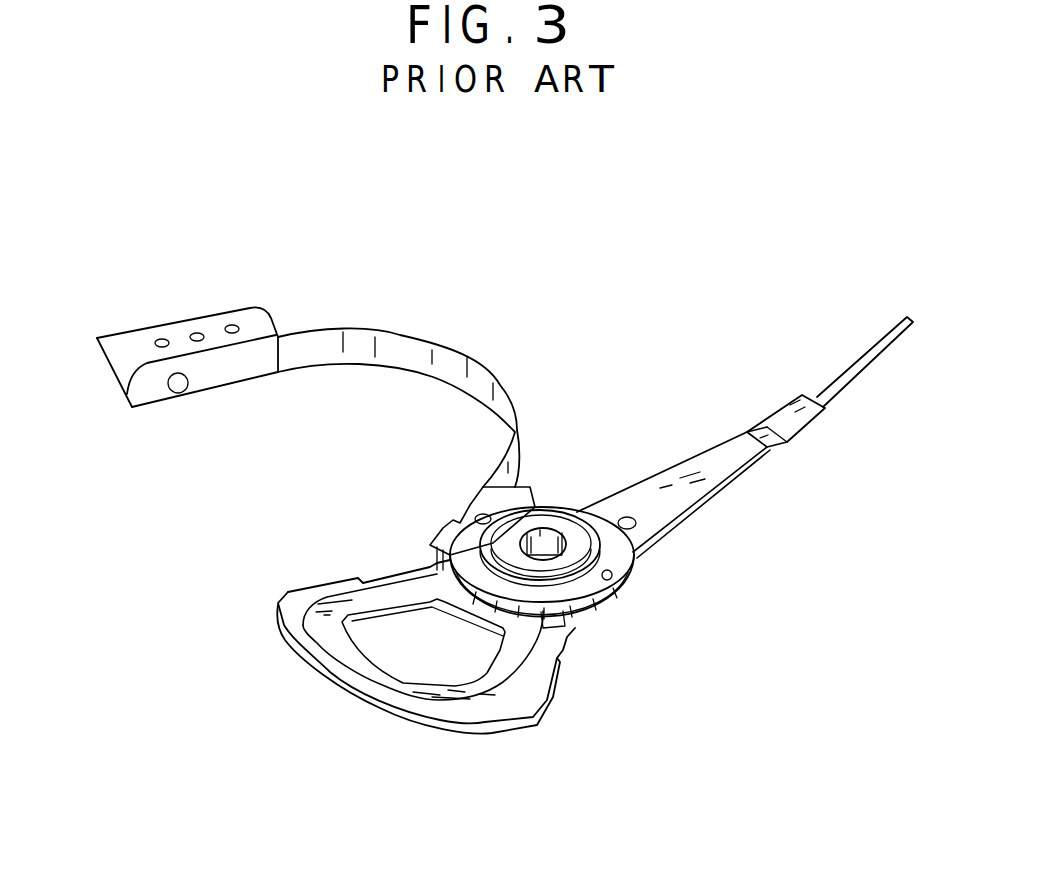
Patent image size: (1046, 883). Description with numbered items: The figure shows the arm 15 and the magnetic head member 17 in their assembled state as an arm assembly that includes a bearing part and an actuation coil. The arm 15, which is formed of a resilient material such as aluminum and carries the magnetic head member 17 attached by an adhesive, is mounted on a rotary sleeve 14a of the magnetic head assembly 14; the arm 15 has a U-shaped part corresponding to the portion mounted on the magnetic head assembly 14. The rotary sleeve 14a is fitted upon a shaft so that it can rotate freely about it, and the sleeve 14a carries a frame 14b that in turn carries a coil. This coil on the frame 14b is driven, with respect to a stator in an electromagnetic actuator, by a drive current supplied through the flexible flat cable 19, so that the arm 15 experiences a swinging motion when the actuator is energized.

The magnetic head assembly 14 is at (670, 541).
The rotary sleeve 14a is at (542, 523).
The frame 14b is at (517, 658).
The arm 15 is at (714, 458).
The magnetic head member 17 is at (864, 366).
The flexible flat cable 19 is at (410, 332).